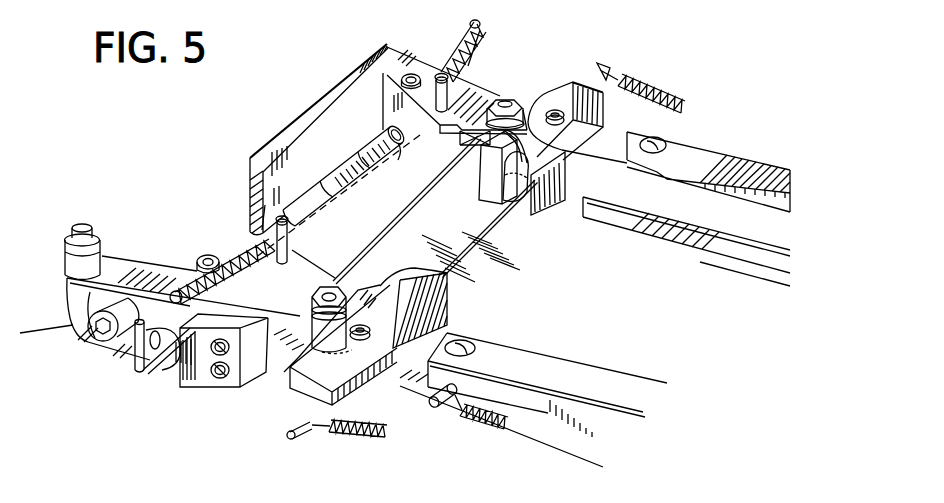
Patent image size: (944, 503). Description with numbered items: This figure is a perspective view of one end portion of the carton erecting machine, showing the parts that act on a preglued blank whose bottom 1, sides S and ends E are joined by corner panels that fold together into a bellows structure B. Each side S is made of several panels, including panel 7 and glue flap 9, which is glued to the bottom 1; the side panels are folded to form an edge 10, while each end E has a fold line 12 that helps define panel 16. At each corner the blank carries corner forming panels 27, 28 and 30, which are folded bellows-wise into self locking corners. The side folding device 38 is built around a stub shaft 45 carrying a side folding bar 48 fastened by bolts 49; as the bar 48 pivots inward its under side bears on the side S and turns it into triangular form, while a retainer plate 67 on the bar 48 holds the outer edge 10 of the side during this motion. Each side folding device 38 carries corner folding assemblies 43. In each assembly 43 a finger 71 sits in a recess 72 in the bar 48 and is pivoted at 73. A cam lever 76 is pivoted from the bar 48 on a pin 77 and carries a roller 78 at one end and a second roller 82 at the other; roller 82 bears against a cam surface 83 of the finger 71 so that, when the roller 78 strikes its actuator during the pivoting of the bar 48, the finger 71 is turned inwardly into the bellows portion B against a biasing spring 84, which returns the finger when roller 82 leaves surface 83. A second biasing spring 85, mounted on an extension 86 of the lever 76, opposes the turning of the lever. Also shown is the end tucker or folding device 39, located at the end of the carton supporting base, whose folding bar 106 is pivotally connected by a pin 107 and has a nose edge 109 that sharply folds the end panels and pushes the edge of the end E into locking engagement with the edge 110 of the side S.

The bottom 1 is at (573, 283).
The panel 7 is at (753, 236).
The glue flap 9 is at (640, 224).
The edge 10 is at (658, 149).
The fold line 12 is at (486, 250).
The panel 16 is at (446, 229).
The panel 27 is at (566, 188).
The panel 28 is at (526, 208).
The panel 30 is at (486, 189).
The side folding device 38 is at (738, 138).
The end tucker or folding device 39 is at (274, 111).
The corner folding assembly 43 is at (570, 76).
The stub shaft 45 is at (58, 337).
The side folding bar 48 is at (534, 418).
The bolt 49 is at (102, 340).
The retainer plate 67 is at (745, 166).
The finger 71 is at (596, 113).
The recess 72 is at (388, 404).
The pivot 73 is at (548, 108).
The cam lever 76 is at (398, 57).
The pin 77 is at (414, 75).
The roller 78 is at (100, 250).
The second roller 82 is at (478, 147).
The cam surface 83 is at (553, 90).
The biasing spring 84 is at (357, 438).
The biasing spring 85 is at (481, 34).
The extension 86 is at (465, 65).
The folding bar 106 is at (248, 206).
The pin 107 is at (398, 158).
The nose edge 109 is at (340, 100).
The edge 110 is at (575, 209).
The end E is at (342, 171).
The side S is at (607, 148).
The bellows structure B is at (545, 226).